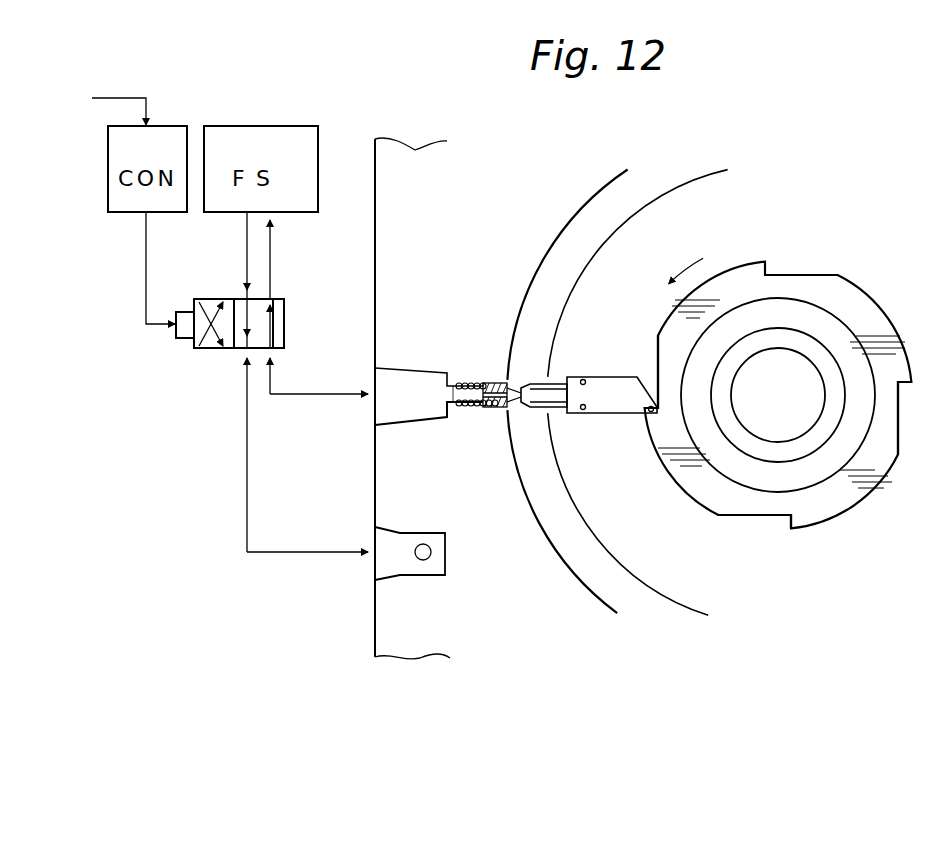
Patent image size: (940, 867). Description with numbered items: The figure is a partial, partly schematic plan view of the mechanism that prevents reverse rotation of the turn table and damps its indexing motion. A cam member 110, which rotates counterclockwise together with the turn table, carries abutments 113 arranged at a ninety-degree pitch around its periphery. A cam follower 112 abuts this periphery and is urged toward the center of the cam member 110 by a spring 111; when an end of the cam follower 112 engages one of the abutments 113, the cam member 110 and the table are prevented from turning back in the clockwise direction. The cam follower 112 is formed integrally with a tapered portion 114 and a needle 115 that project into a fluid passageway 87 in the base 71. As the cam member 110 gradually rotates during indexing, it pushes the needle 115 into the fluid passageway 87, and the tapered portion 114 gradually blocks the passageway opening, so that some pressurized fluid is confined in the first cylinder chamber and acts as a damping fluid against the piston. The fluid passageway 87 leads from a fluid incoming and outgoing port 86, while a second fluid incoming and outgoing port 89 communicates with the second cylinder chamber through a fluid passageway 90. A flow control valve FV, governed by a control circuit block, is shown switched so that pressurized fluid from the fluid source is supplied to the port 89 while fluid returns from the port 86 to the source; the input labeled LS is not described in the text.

The base 71 is at (411, 157).
The fluid incoming and outgoing port 86 is at (403, 381).
The fluid passageway 87 is at (472, 410).
The fluid incoming and outgoing port 89 is at (380, 568).
The fluid passageway 90 is at (425, 560).
The cam member 110 is at (821, 282).
The spring 111 is at (461, 383).
The cam follower 112 is at (620, 377).
The abutments 113 is at (906, 386).
The tapered portion 114 is at (530, 385).
The needle 115 is at (510, 380).
The limit switch LS is at (140, 97).
The flow control valve FV is at (212, 350).